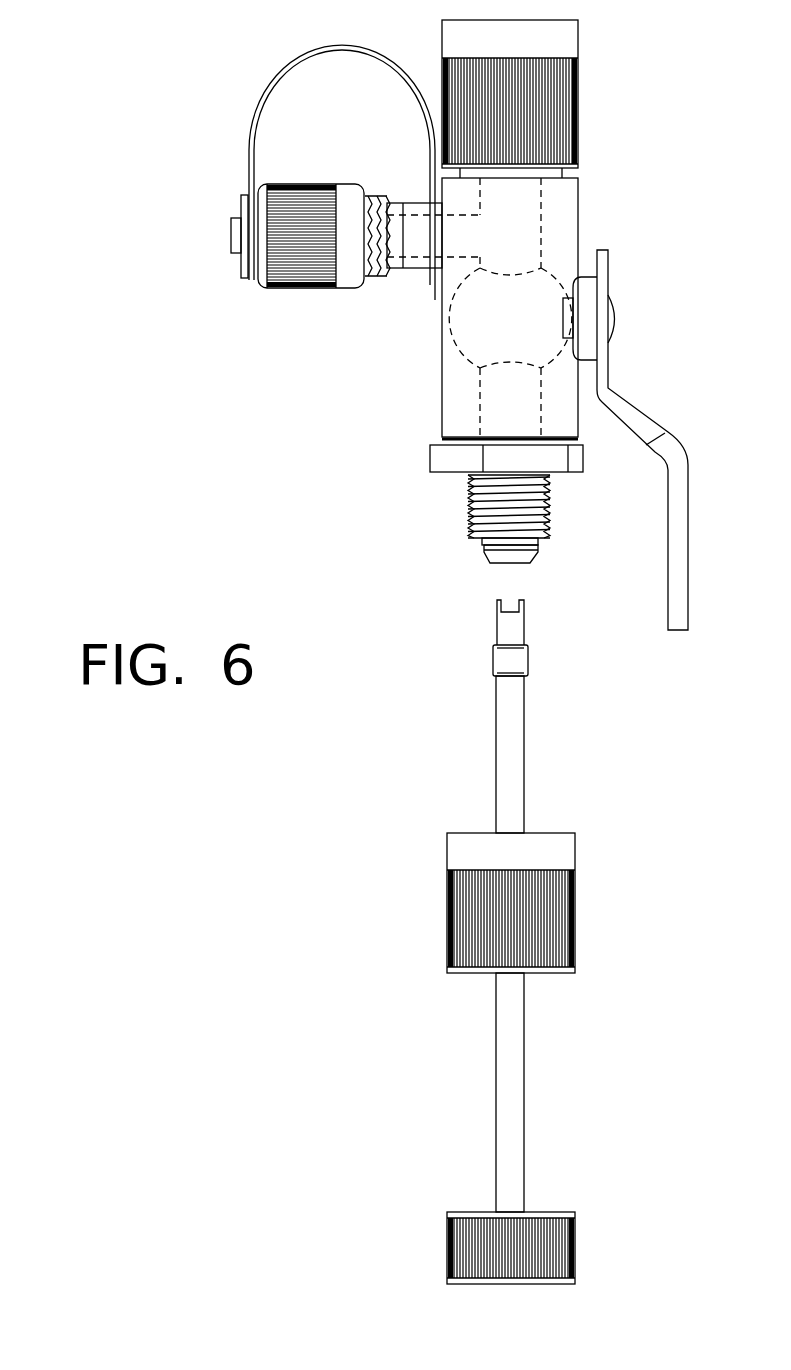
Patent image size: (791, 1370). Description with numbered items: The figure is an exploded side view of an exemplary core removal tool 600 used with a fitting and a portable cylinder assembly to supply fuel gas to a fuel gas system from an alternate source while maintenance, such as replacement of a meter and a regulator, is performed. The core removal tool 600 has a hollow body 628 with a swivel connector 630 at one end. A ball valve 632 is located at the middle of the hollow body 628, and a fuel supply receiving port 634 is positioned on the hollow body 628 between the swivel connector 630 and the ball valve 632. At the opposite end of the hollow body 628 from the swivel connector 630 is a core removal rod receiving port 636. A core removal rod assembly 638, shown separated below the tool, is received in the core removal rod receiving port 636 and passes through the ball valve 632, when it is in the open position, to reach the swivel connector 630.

The core removal tool 600 is at (148, 75).
The hollow body 628 is at (457, 417).
The swivel connector 630 is at (567, 88).
The ball valve 632 is at (608, 287).
The fuel supply receiving port 634 is at (393, 277).
The core removal rod receiving port 636 is at (516, 565).
The core removal rod assembly 638 is at (495, 1099).